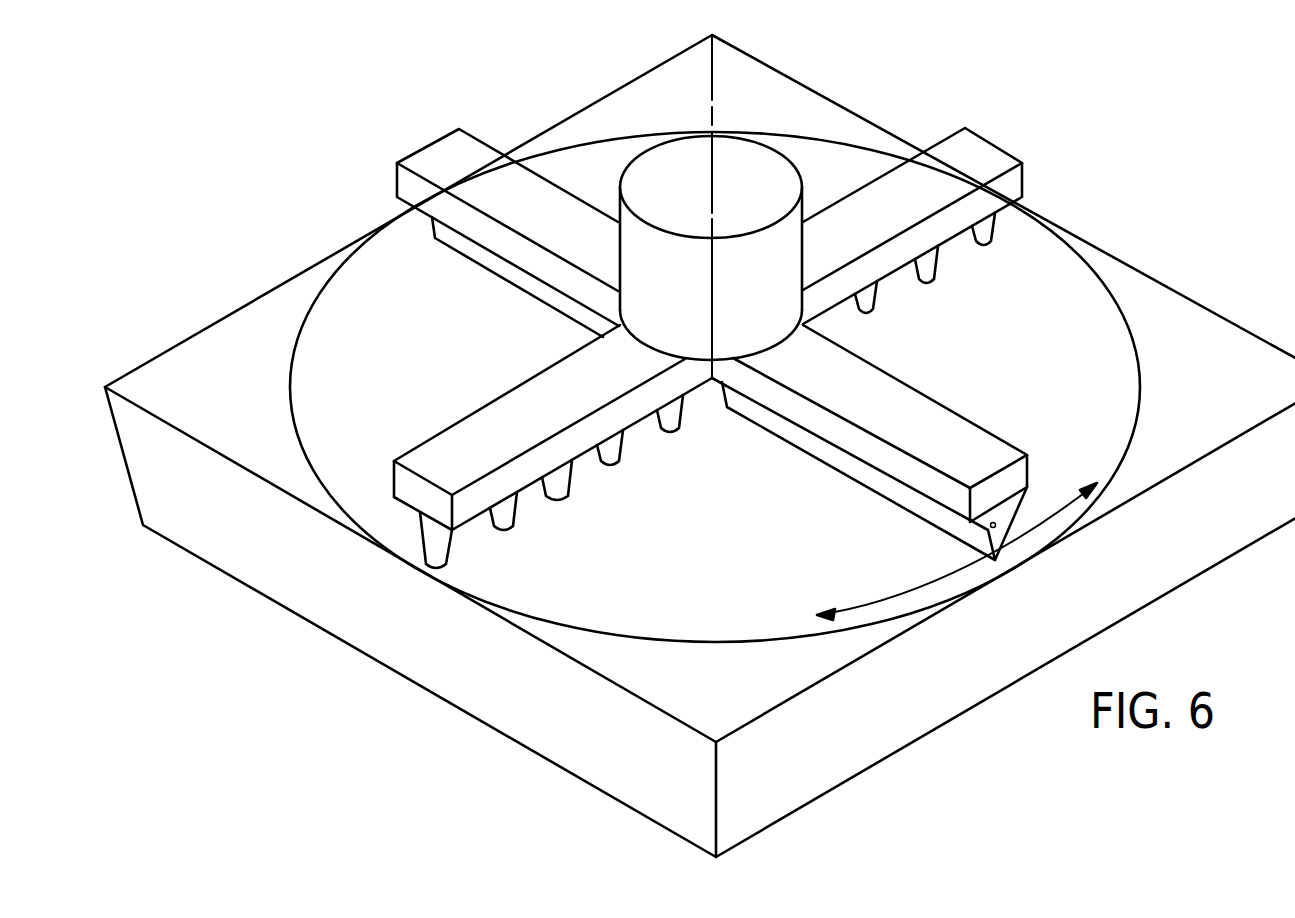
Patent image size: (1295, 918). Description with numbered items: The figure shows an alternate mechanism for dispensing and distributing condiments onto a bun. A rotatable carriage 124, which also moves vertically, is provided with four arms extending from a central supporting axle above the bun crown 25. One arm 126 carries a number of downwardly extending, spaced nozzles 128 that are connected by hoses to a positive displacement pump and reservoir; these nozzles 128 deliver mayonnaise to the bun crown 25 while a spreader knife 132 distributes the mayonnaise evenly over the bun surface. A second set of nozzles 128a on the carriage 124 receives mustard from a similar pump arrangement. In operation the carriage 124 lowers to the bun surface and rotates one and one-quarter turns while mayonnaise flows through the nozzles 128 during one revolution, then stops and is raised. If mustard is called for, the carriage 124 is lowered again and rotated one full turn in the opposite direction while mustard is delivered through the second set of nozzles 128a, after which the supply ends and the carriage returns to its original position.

The bun crown 25 is at (292, 431).
The rotatable carriage 124 is at (940, 108).
The arm 126 is at (507, 393).
The nozzles 128 is at (630, 478).
The second set of nozzles 128a is at (877, 312).
The spreader knife 132 is at (517, 288).